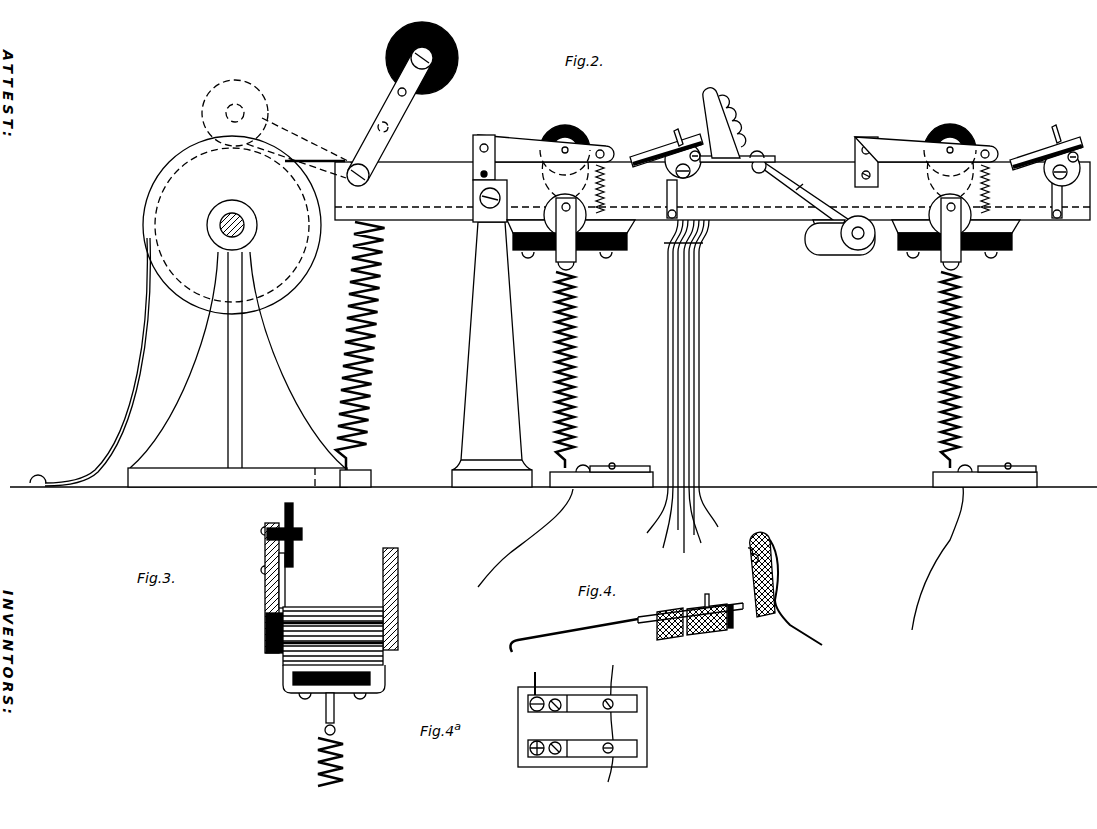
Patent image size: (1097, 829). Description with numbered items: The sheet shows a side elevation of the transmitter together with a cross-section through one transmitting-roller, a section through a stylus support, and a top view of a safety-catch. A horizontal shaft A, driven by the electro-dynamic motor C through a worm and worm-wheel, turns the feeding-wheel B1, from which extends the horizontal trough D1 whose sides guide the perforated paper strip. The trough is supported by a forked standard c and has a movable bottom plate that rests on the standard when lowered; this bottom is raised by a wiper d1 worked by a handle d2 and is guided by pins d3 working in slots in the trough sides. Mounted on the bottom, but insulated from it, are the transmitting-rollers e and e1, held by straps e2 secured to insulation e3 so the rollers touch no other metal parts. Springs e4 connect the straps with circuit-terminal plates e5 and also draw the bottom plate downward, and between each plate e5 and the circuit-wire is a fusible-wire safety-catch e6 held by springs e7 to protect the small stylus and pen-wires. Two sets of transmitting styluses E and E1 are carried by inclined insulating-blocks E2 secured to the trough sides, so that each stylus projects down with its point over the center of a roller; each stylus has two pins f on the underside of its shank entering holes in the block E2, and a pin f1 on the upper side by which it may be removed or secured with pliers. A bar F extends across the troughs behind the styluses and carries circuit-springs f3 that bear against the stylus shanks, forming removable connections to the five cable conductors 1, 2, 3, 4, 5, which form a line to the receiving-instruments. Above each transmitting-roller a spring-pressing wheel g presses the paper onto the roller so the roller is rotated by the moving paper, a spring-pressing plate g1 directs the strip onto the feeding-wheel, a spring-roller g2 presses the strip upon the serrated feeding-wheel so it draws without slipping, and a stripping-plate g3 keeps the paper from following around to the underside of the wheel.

In FIG. 2, the horizontal shaft A is at (245, 228).
In FIG. 2, the feeding-wheel B1 is at (232, 225).
In FIG. 2, the electro-dynamic motor C is at (330, 354).
In FIG. 2, the forked standard c is at (496, 178).
In FIG. 2, the trough D1 is at (712, 188).
In FIG. 3, the trough D1 is at (346, 588).
In FIG. 2, the wiper d1 is at (828, 235).
In FIG. 2, the handle d2 is at (806, 197).
In FIG. 2, the guide pin d3 is at (678, 213).
In FIG. 2, the transmitting-stylus set E is at (666, 145).
In FIG. 4, the transmitting-stylus set E is at (626, 627).
In FIG. 2, the transmitting-stylus set E1 is at (1046, 153).
In FIG. 2, the insulating-block E2 is at (856, 169).
In FIG. 4, the insulating-block E2 is at (696, 629).
In FIG. 2, the transmitting-roller e is at (571, 219).
In FIG. 3, the transmitting-roller e is at (333, 626).
In FIG. 2, the transmitting-roller e1 is at (1006, 243).
In FIG. 2, the strap e2 is at (566, 234).
In FIG. 3, the strap e2 is at (322, 680).
In FIG. 2, the insulation e3 is at (578, 241).
In FIG. 3, the insulation e3 is at (380, 681).
In FIG. 2, the spring e4 is at (572, 330).
In FIG. 3, the spring e4 is at (341, 739).
In FIG. 4A, the spring e4 is at (541, 726).
In FIG. 2, the circuit-terminal plate e5 is at (776, 455).
In FIG. 4A, the circuit-terminal plate e5 is at (581, 732).
In FIG. 2, the fusible-wire safety-catch e6 is at (1015, 476).
In FIG. 4A, the fusible-wire safety-catch e6 is at (582, 723).
In FIG. 2, the spring e7 is at (630, 463).
In FIG. 4A, the spring e7 is at (640, 704).
In FIG. 2, the bar F is at (737, 117).
In FIG. 4, the bar F is at (777, 616).
In FIG. 4, the pin f is at (711, 629).
In FIG. 2, the pin f1 is at (865, 124).
In FIG. 4, the pin f1 is at (706, 589).
In FIG. 2, the circuit-spring f3 is at (702, 112).
In FIG. 4, the circuit-spring f3 is at (745, 586).
In FIG. 2, the spring-pressing wheel g is at (738, 160).
In FIG. 3, the spring-pressing wheel g is at (293, 534).
In FIG. 2, the spring-pressing plate g1 is at (315, 150).
In FIG. 2, the spring-roller g2 is at (339, 104).
In FIG. 2, the stripping-plate g3 is at (90, 362).
In FIG. 2, the cable conductor 1 is at (652, 519).
In FIG. 2, the cable conductor 2 is at (665, 528).
In FIG. 2, the cable conductor 3 is at (688, 528).
In FIG. 2, the cable conductor 4 is at (704, 522).
In FIG. 2, the cable conductor 5 is at (716, 514).